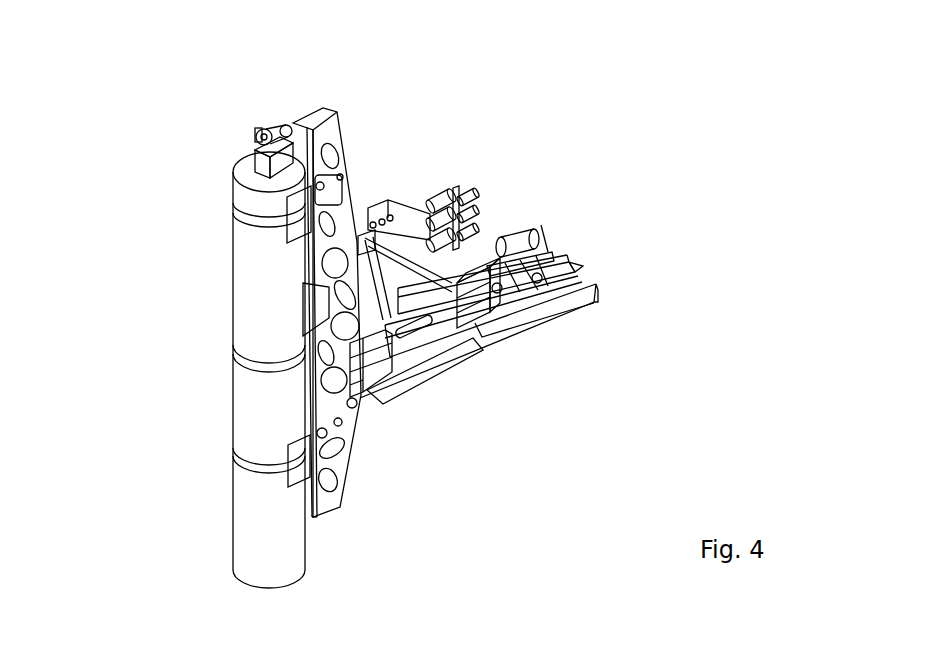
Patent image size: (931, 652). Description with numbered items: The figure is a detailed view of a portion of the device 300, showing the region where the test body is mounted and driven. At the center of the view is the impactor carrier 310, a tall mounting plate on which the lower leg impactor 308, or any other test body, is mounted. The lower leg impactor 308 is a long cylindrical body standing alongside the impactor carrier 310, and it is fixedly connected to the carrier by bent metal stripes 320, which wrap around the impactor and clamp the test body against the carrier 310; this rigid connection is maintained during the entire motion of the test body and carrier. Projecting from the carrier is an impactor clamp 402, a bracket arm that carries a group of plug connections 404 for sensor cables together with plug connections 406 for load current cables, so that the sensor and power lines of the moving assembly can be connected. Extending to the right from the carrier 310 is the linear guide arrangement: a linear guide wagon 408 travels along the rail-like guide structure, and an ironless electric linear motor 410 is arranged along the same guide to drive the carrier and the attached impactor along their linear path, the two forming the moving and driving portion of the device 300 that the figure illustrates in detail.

The device 300 is at (646, 186).
The lower leg impactor 308 is at (268, 291).
The impactor carrier 310 is at (339, 137).
The bent metal stripes 320 is at (235, 233).
The impactor clamp 402 is at (396, 229).
The plug connections for sensor cables 404 is at (473, 200).
The plug connections for load current cables 406 is at (471, 220).
The linear guide wagon 408 is at (491, 308).
The ironless electric linear motor 410 is at (443, 375).